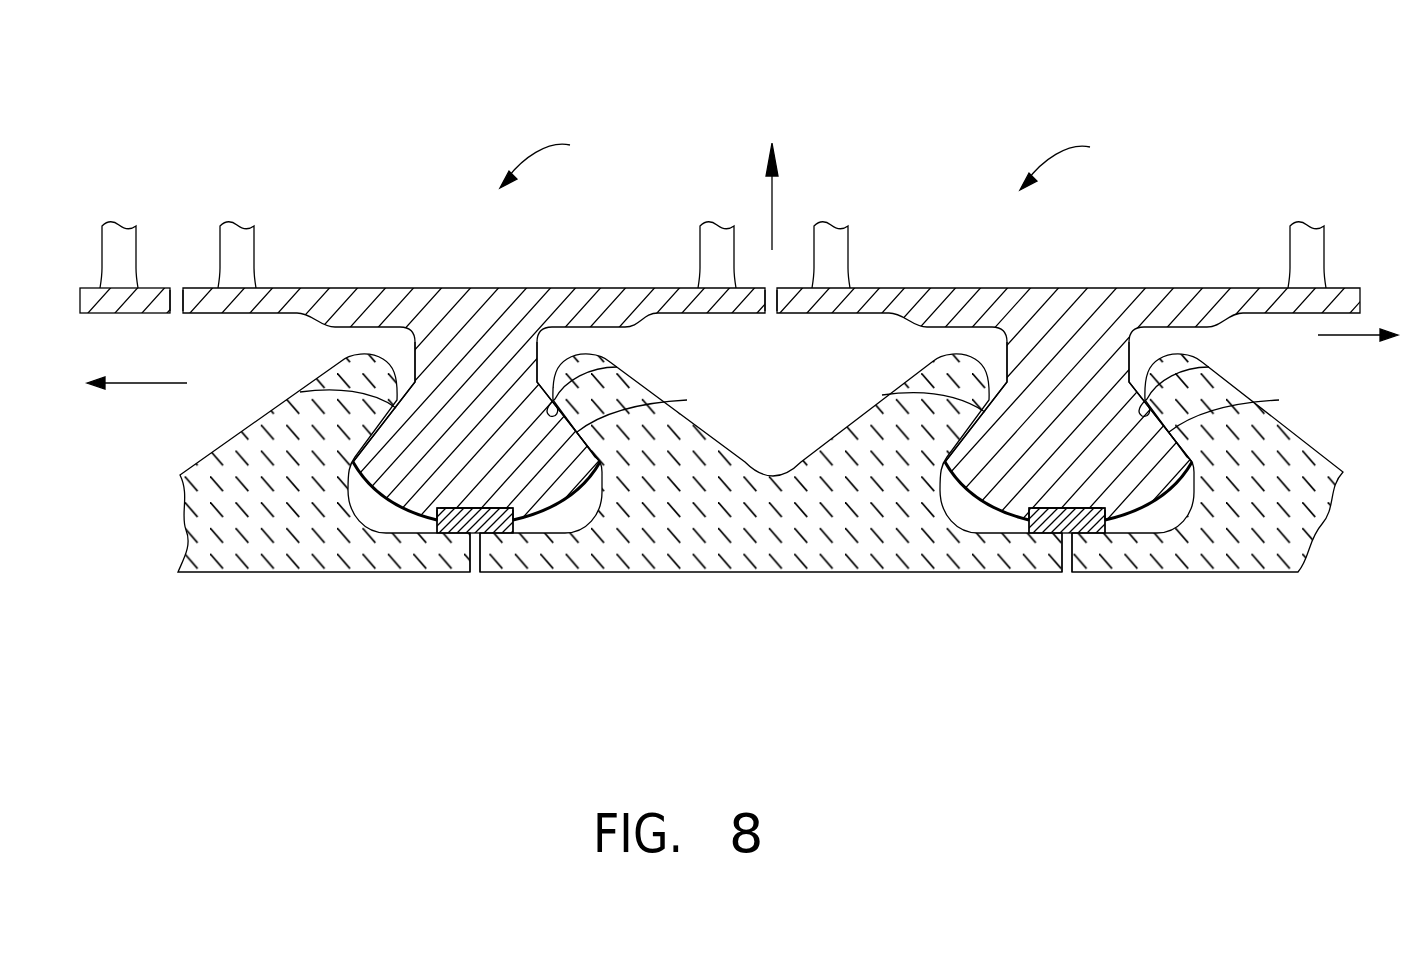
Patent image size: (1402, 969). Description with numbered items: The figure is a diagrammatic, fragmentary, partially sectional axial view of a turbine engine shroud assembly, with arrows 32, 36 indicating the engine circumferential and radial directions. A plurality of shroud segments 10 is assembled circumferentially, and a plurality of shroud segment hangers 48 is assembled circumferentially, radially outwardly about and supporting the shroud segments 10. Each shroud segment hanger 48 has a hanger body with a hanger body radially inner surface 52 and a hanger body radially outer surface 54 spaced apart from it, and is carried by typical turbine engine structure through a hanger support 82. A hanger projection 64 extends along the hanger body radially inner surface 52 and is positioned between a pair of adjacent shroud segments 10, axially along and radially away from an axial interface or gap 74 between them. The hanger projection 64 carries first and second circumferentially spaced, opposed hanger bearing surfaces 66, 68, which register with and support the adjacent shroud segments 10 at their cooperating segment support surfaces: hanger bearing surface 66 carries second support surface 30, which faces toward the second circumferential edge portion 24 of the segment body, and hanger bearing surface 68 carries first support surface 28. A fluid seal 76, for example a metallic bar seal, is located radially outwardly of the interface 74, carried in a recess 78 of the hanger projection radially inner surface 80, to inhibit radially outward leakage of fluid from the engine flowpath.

The shroud segment 10 is at (238, 600).
The second circumferential edge portion 24 is at (446, 560).
The first support surface 28 is at (617, 367).
The second support surface 30 is at (375, 433).
The circumferential direction arrow 32 is at (160, 384).
The radial direction arrow 36 is at (773, 200).
The shroud segment hanger 48 is at (814, 158).
The hanger body radially inner surface 52 is at (227, 313).
The hanger body radially outer surface 54 is at (365, 288).
The hanger projection 64 is at (492, 411).
The first hanger bearing surface 66 is at (300, 392).
The second hanger bearing surface 68 is at (675, 401).
The axial interface 74 is at (475, 562).
The fluid seal 76 is at (468, 508).
The recess 78 is at (446, 522).
The hanger projection radially inner surface 80 is at (528, 522).
The hanger support 82 is at (138, 245).